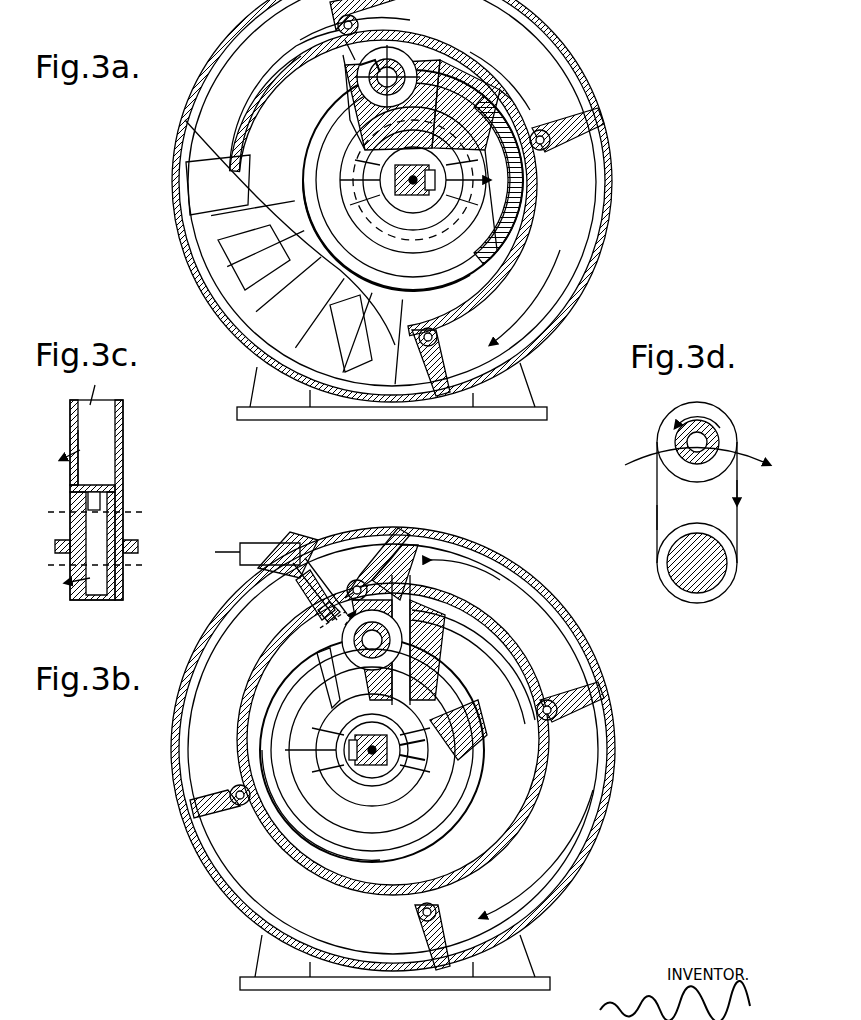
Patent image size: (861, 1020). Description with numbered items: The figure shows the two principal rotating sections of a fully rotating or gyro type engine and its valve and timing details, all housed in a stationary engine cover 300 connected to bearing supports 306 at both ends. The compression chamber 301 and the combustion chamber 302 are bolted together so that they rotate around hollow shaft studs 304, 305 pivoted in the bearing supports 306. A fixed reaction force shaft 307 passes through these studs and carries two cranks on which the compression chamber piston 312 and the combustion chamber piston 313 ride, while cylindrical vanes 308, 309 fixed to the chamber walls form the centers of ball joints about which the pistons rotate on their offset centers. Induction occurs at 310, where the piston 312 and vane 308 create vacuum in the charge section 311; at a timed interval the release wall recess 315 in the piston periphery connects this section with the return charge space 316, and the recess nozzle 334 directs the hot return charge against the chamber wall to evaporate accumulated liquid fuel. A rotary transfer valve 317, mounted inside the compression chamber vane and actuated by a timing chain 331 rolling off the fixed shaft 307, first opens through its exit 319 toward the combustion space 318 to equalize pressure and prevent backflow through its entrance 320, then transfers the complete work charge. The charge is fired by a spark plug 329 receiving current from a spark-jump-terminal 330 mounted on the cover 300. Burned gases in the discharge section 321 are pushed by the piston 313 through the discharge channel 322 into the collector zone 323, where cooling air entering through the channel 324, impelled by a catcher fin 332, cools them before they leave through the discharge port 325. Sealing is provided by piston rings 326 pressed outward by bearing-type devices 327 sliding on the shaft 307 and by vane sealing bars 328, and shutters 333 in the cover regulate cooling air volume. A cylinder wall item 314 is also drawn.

In FIG. 3A, the engine cover 300 is at (184, 173).
In FIG. 3B, the engine cover 300 is at (604, 710).
In FIG. 3A, the compression chamber 301 is at (309, 67).
In FIG. 3A, the combustion chamber 302 is at (467, 198).
In FIG. 3B, the combustion chamber 302 is at (250, 822).
In FIG. 3A, the hollow shaft stud 304 is at (359, 224).
In FIG. 3B, the hollow shaft stud 305 is at (430, 788).
In FIG. 3A, the bearing support 306 is at (523, 392).
In FIG. 3B, the bearing support 306 is at (257, 958).
In FIG. 3A, the reaction force shaft 307 is at (406, 164).
In FIG. 3B, the reaction force shaft 307 is at (376, 724).
In FIG. 3D, the reaction force shaft 307 is at (716, 582).
In FIG. 3A, the cylindrical vane 308 is at (450, 62).
In FIG. 3B, the cylindrical vane 309 is at (426, 624).
In FIG. 3A, the induction point 310 is at (384, 30).
In FIG. 3C, the induction point 310 is at (115, 416).
In FIG. 3A, the charge section of compression chamber 311 is at (269, 101).
In FIG. 3A, the compression chamber piston 312 is at (316, 172).
In FIG. 3B, the combustion chamber piston 313 is at (414, 852).
In FIG. 3A, the seal 314 is at (342, 62).
In FIG. 3A, the release wall recess 315 is at (505, 172).
In FIG. 3A, the return charge space 316 is at (471, 72).
In FIG. 3A, the transfer valve 317 is at (392, 42).
In FIG. 3C, the transfer valve 317 is at (114, 514).
In FIG. 3D, the transfer valve 317 is at (666, 434).
In FIG. 3B, the combustion space 318 is at (313, 622).
In FIG. 3B, the transfer valve exit 319 is at (391, 598).
In FIG. 3A, the transfer valve entrance 320 is at (432, 42).
In FIG. 3B, the discharge section 321 is at (538, 784).
In FIG. 3B, the discharge channel 322 is at (456, 700).
In FIG. 3B, the collector zone 323 is at (414, 752).
In FIG. 3B, the cooling air channel 324 is at (416, 612).
In FIG. 3B, the discharge port 325 is at (386, 814).
In FIG. 3A, the piston rings 326 is at (463, 275).
In FIG. 3B, the piston rings 326 is at (307, 778).
In FIG. 3A, the piston bearing sealing devices 327 is at (412, 204).
In FIG. 3B, the piston bearing sealing devices 327 is at (342, 760).
In FIG. 3A, the vane sealing bars 328 is at (345, 100).
In FIG. 3B, the vane sealing bars 328 is at (330, 682).
In FIG. 3B, the spark plug 329 is at (296, 582).
In FIG. 3B, the spark-jump-terminal 330 is at (305, 538).
In FIG. 3D, the timing chain 331 is at (730, 489).
In FIG. 3B, the catcher fin 332 is at (382, 564).
In FIG. 3A, the shutter 333 is at (235, 236).
In FIG. 3A, the recess nozzle 334 is at (503, 197).